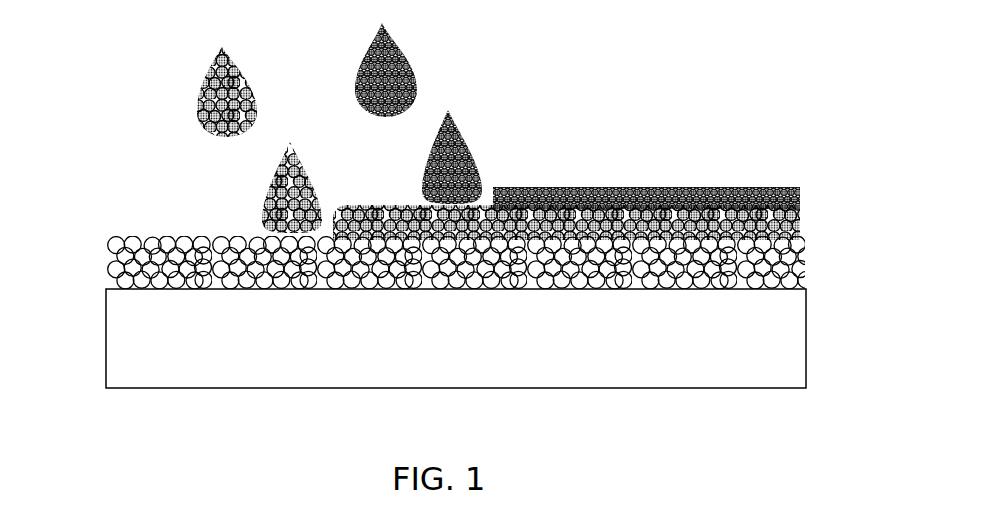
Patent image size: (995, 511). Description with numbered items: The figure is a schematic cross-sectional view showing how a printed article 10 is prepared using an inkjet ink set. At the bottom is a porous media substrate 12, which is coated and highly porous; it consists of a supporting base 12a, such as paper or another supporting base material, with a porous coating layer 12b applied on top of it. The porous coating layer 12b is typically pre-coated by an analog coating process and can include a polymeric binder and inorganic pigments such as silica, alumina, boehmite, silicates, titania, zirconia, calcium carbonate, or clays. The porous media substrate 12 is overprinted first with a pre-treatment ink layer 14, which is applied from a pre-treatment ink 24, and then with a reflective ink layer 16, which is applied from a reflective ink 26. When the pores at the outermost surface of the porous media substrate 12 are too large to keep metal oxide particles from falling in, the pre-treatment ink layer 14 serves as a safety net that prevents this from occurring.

The printed article 10 is at (141, 170).
The porous media substrate 12 is at (98, 242).
The supporting base 12a is at (773, 347).
The porous coating layer 12b is at (777, 260).
The pre-treatment ink layer 14 is at (798, 218).
The reflective ink layer 16 is at (798, 195).
The pre-treatment ink 24 is at (247, 82).
The reflective ink 26 is at (410, 63).